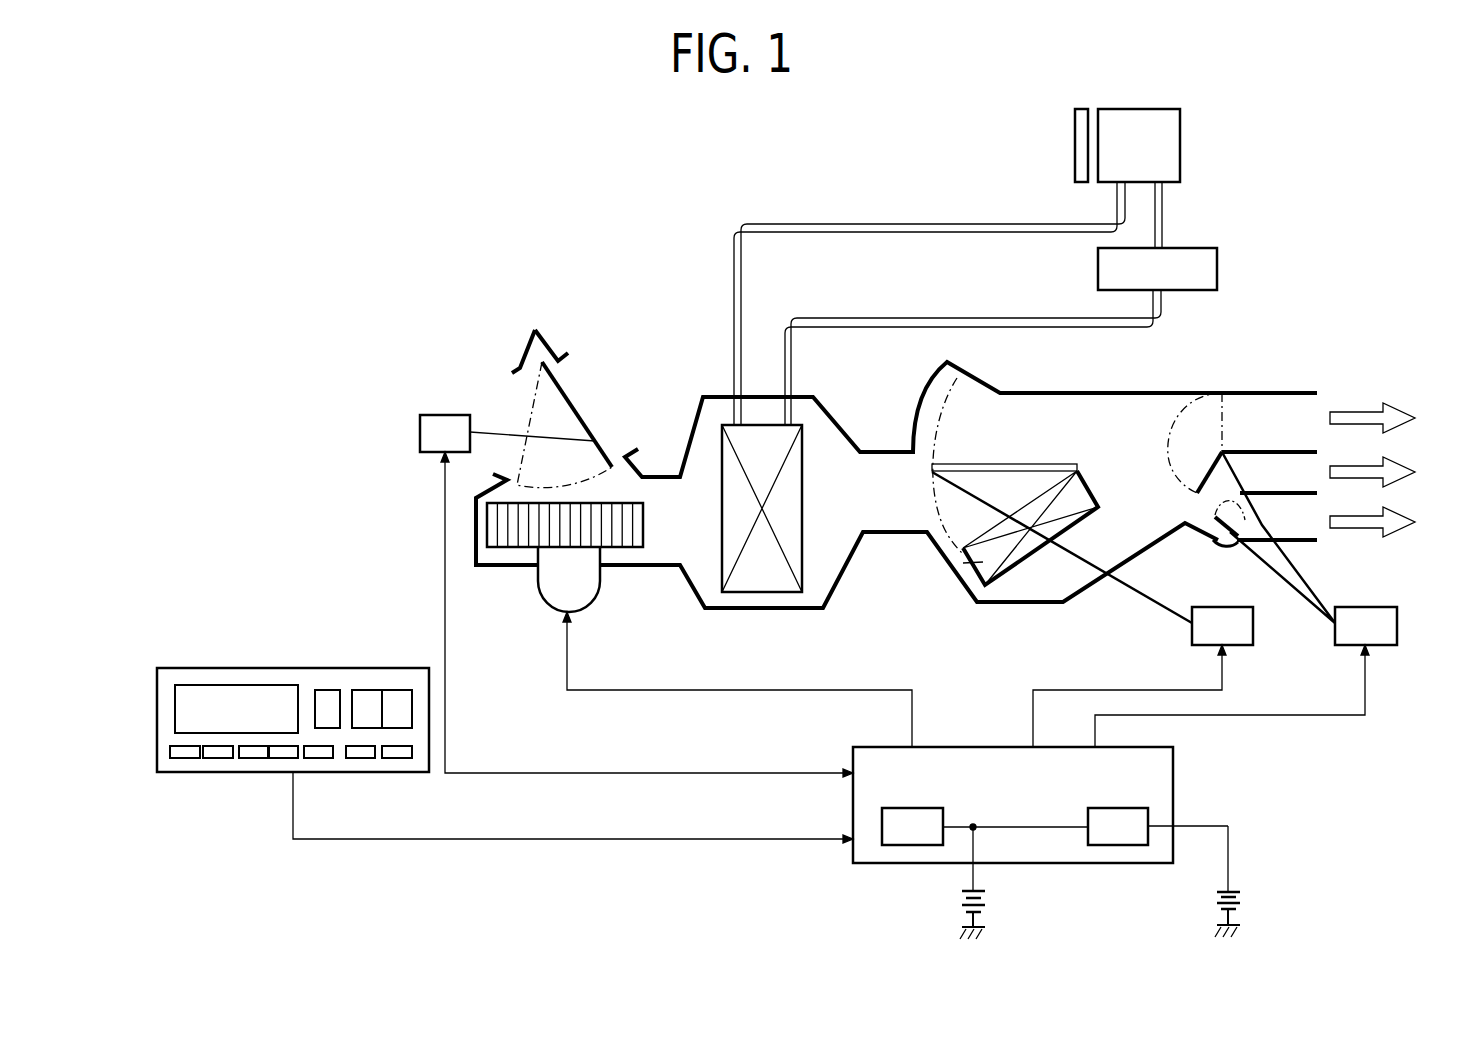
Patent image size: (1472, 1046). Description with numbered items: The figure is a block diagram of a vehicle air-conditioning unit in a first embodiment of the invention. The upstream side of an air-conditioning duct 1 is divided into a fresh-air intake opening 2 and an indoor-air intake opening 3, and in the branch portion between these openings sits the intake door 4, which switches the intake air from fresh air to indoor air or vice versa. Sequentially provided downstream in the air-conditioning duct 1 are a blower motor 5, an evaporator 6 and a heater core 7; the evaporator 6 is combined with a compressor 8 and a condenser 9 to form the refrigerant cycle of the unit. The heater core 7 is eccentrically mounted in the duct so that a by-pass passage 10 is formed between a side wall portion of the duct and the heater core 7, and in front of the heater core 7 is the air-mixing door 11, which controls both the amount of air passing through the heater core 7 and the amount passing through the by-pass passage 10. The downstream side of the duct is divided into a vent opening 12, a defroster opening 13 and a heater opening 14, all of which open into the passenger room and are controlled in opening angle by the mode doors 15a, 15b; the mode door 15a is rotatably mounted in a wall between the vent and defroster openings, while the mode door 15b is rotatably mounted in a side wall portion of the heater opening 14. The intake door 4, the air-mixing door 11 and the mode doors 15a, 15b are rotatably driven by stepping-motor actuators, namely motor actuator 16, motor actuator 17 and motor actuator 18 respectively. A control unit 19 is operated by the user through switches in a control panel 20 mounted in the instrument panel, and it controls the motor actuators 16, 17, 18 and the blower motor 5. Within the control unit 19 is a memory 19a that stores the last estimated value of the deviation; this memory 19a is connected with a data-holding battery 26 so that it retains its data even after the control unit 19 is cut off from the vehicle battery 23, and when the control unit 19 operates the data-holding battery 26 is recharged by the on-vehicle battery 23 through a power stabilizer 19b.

The air-conditioning duct 1 is at (717, 392).
The fresh-air intake opening 2 is at (518, 377).
The indoor-air intake opening 3 is at (567, 358).
The intake door 4 is at (570, 398).
The blower motor 5 is at (588, 595).
The evaporator 6 is at (797, 465).
The heater core 7 is at (965, 562).
The compressor 8 is at (1182, 140).
The condenser 9 is at (1219, 268).
The by-pass passage 10 is at (1015, 445).
The air-mixing door 11 is at (968, 463).
The vent opening 12 is at (1290, 391).
The defroster opening 13 is at (1308, 456).
The heater opening 14 is at (1316, 524).
The mode door 15a is at (1200, 470).
The mode door 15b is at (1216, 539).
The motor actuator 16 is at (418, 432).
The motor actuator 17 is at (1253, 627).
The motor actuator 18 is at (1397, 627).
The control unit 19 is at (1173, 800).
The memory 19a is at (913, 807).
The power stabilizer 19b is at (1107, 807).
The control panel 20 is at (250, 668).
The vehicle battery 23 is at (1237, 887).
The data-holding battery 26 is at (983, 893).